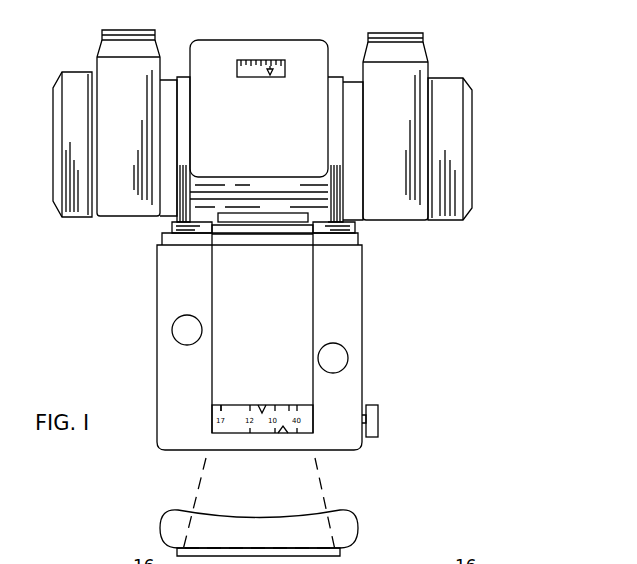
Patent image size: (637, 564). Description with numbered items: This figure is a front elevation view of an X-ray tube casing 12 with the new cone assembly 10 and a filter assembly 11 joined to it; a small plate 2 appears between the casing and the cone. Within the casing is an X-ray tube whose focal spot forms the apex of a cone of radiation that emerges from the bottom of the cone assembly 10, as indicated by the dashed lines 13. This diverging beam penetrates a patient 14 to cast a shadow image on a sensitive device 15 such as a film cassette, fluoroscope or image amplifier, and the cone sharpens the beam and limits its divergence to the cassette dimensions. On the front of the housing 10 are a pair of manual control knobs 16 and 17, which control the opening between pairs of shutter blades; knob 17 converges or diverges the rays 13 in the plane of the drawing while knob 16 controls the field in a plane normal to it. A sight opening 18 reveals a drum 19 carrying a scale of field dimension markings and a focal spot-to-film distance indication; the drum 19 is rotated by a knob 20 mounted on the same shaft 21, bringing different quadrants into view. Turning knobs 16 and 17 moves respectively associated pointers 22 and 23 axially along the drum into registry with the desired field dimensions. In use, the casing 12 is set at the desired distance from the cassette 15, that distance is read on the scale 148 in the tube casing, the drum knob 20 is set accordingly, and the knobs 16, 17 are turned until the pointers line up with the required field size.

The plate 2 is at (263, 218).
The cone assembly 10 is at (393, 349).
The filter assembly 11 is at (352, 228).
The X-ray tube casing 12 is at (500, 163).
The dashed lines 13 is at (325, 478).
The patient 14 is at (358, 528).
The sensitive device 15 is at (340, 553).
The manual control knob 16 is at (335, 343).
The manual control knob 17 is at (187, 315).
The sight opening 18 is at (237, 405).
The drum 19 is at (289, 406).
The knob 20 is at (378, 426).
The shaft 21 is at (370, 405).
The pointer 22 is at (283, 433).
The pointer 23 is at (262, 405).
The scale 148 is at (285, 70).